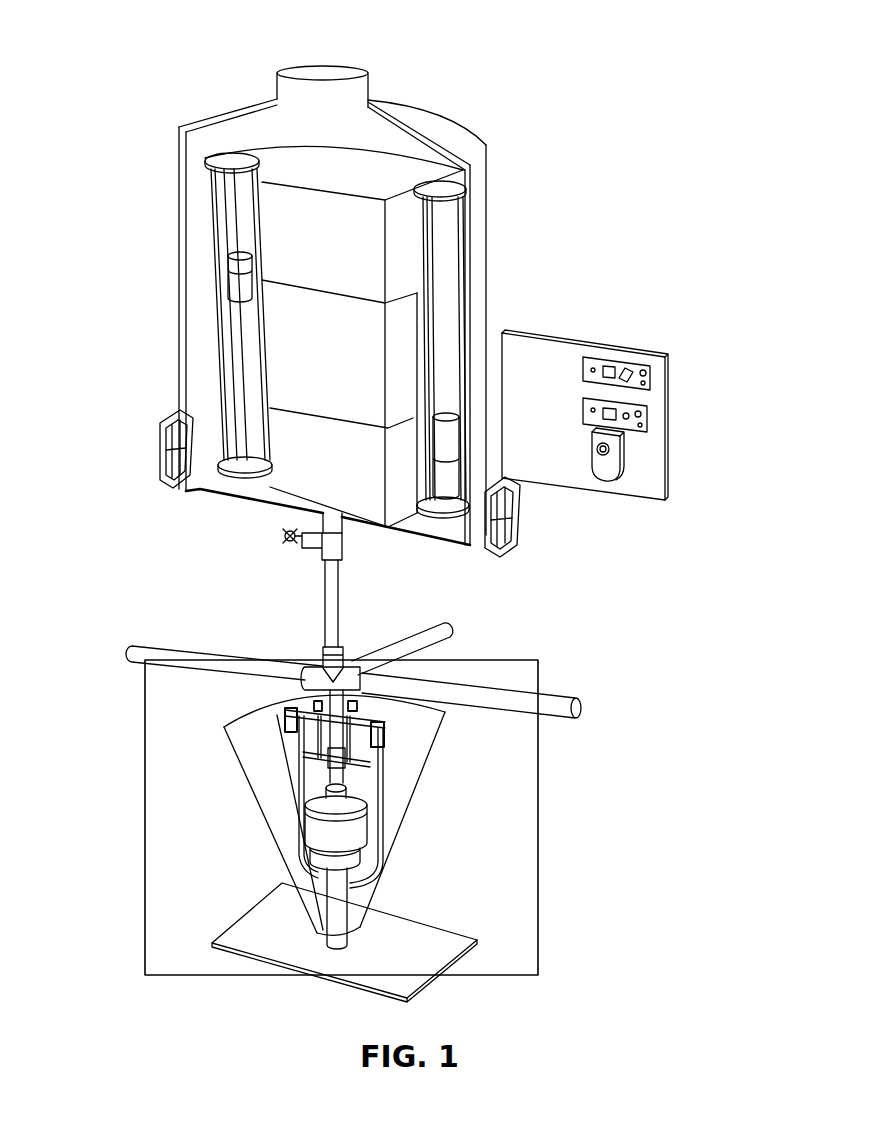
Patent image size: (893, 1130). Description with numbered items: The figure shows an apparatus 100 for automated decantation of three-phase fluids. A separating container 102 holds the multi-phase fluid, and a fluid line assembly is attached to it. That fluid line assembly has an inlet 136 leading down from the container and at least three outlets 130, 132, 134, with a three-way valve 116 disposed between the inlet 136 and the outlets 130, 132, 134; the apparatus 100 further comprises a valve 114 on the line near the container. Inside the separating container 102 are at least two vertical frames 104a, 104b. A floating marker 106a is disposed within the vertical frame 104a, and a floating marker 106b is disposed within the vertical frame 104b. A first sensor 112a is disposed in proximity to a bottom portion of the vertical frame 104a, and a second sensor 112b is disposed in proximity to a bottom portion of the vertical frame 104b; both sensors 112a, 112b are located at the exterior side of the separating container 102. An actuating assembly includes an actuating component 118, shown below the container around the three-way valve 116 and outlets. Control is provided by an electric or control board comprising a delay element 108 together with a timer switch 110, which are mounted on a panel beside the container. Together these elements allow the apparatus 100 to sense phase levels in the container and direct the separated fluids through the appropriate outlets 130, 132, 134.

The apparatus for automated decantation of three-phase fluids 100 is at (155, 40).
The separating container 102 is at (440, 128).
The vertical frame 104a is at (213, 192).
The vertical frame 104b is at (455, 237).
The floating marker 106a is at (230, 273).
The floating marker 106b is at (447, 445).
The delay element 108 is at (650, 419).
The timer switch 110 is at (622, 452).
The first sensor 112a is at (160, 450).
The second sensor 112b is at (518, 524).
The valve 114 is at (284, 536).
The three-way valve 116 is at (322, 655).
The actuating component 118 is at (145, 770).
The outlet 130 is at (132, 650).
The outlet 132 is at (583, 706).
The outlet 134 is at (455, 626).
The inlet 136 is at (342, 540).